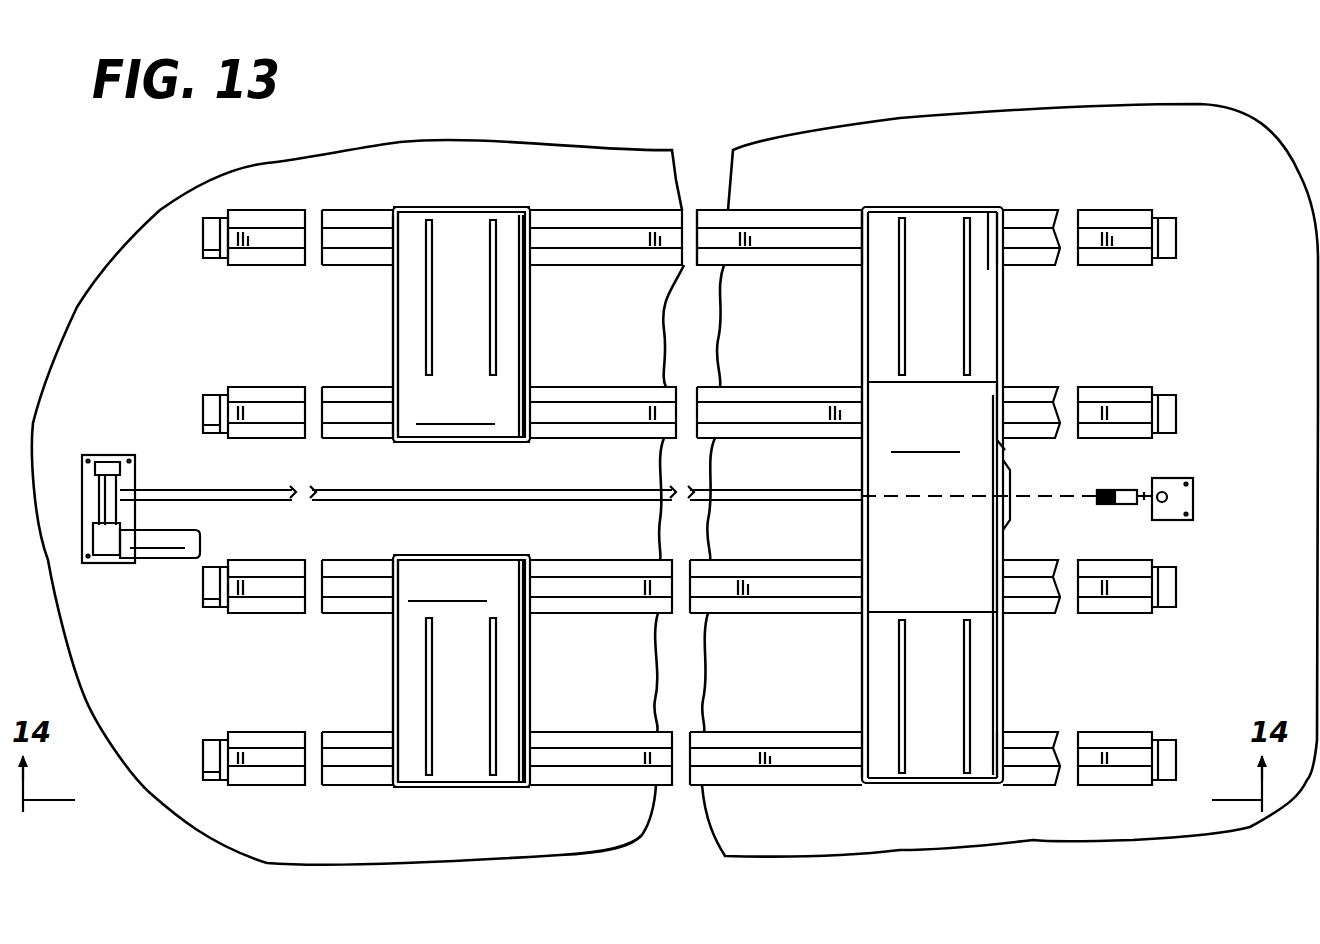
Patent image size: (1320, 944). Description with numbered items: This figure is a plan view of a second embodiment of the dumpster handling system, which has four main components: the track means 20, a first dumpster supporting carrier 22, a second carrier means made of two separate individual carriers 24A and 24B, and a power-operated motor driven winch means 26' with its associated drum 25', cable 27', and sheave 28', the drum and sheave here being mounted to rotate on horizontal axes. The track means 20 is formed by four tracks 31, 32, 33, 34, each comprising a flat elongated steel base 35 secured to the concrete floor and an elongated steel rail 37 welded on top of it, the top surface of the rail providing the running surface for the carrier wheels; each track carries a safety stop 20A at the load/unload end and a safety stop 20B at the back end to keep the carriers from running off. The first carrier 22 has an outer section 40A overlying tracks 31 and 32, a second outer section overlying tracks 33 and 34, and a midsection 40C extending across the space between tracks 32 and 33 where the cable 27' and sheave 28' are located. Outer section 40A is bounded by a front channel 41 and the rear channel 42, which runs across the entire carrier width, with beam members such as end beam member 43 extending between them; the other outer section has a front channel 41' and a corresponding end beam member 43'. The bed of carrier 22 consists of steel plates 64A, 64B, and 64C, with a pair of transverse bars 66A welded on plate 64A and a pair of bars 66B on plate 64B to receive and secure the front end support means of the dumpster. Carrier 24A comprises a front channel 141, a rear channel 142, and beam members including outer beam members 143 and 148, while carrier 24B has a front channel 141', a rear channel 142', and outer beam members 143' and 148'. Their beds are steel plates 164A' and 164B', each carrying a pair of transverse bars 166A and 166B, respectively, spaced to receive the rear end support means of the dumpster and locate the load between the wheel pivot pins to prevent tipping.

The track means 20 is at (781, 208).
The first carrier 22 is at (938, 204).
The safety stop 20A is at (1170, 250).
The safety stop 20B is at (212, 262).
The carrier 24A is at (465, 792).
The carrier 24B is at (497, 204).
The drum 25' is at (118, 481).
The winch means 26' is at (138, 588).
The cable 27' is at (608, 476).
The sheave 28' is at (1127, 486).
The track 31 is at (718, 752).
The track 32 is at (790, 590).
The track 33 is at (740, 415).
The track 34 is at (778, 240).
The base 35 is at (748, 765).
The rail 37 is at (805, 762).
The outer section 40A is at (1010, 345).
The midsection 40C is at (1010, 512).
The front channel 41 is at (1040, 607).
The front channel 41' is at (1052, 402).
The rear channel 42 is at (862, 680).
The beam member 43 is at (1025, 780).
The end beam member 43' is at (1042, 213).
The plate 64A is at (937, 760).
The plate 64B is at (918, 245).
The plate 64C is at (942, 493).
The bars 66A is at (965, 622).
The bars 66B is at (968, 345).
The front channel 141 is at (577, 671).
The front channel 141' is at (579, 326).
The rear channel 142 is at (336, 671).
The rear channel 142' is at (346, 326).
The beam member 143 is at (488, 816).
The beam member 143' is at (449, 183).
The beam member 148 is at (478, 535).
The beam member 148' is at (489, 463).
The plate 164A' is at (447, 671).
The plate 164B' is at (451, 324).
The bars 166A is at (493, 708).
The bars 166B is at (493, 305).